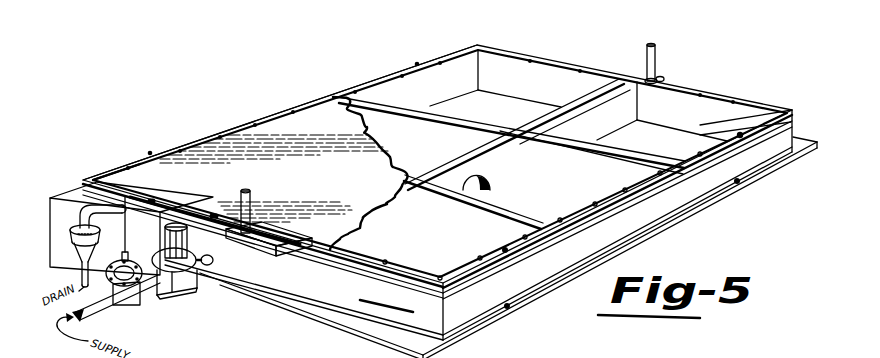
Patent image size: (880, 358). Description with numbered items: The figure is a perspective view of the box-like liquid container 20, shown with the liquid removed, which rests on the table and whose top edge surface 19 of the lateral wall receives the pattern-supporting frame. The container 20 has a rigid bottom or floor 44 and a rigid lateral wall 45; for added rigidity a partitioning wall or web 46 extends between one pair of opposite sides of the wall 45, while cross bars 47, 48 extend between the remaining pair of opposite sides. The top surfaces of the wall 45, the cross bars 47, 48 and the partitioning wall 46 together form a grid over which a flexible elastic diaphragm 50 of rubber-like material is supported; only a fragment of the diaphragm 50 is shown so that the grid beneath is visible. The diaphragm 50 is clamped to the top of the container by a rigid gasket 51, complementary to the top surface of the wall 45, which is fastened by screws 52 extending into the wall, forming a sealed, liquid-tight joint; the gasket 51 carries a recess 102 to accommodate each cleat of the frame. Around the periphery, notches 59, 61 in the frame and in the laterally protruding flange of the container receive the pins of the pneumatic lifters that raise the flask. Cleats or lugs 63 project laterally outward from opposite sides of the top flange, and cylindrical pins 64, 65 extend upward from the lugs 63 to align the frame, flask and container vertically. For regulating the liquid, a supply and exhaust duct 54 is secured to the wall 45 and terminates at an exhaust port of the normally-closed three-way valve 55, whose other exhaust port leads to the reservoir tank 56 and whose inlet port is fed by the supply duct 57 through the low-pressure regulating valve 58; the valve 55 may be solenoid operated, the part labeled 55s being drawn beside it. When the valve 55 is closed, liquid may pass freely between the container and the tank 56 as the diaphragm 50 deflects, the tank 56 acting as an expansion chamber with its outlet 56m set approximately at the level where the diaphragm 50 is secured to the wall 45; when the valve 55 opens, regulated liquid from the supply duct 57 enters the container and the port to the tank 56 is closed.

The top edge surface 19 is at (233, 128).
The liquid container 20 is at (101, 158).
The bottom or floor 44 is at (746, 110).
The lateral wall 45 is at (752, 112).
The partitioning wall or web 46 is at (692, 143).
The cross bar 47 is at (508, 201).
The cross bar 48 is at (613, 140).
The flexible elastic diaphragm 50 is at (392, 101).
The rigid gasket 51 is at (267, 110).
The screws 52 is at (97, 180).
The supply and exhaust duct 54 is at (210, 265).
The three-way valve 55 is at (174, 288).
The pump support 55s is at (167, 294).
The reservoir tank 56 is at (66, 198).
The outlet 56m is at (80, 222).
The supply duct 57 is at (92, 316).
The pressure regulating valve 58 is at (128, 303).
The notch 59 is at (150, 153).
The notch 61 is at (739, 184).
The cleats or lugs 63 is at (660, 82).
The cylindrical pin 64 is at (657, 48).
The cylindrical pin 65 is at (250, 205).
The recess 102 is at (213, 213).